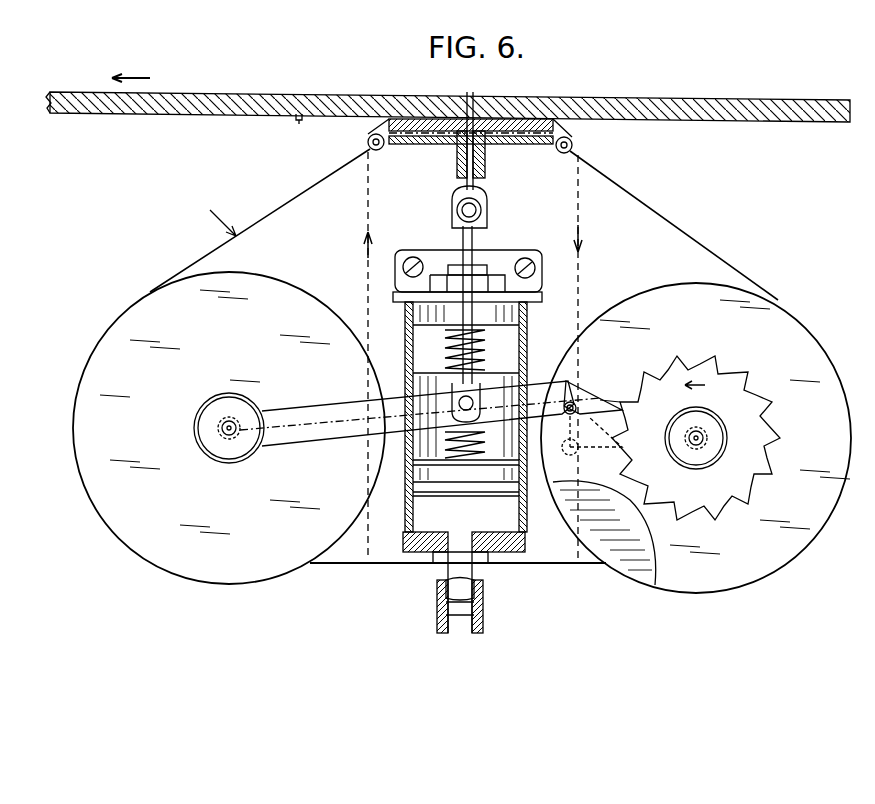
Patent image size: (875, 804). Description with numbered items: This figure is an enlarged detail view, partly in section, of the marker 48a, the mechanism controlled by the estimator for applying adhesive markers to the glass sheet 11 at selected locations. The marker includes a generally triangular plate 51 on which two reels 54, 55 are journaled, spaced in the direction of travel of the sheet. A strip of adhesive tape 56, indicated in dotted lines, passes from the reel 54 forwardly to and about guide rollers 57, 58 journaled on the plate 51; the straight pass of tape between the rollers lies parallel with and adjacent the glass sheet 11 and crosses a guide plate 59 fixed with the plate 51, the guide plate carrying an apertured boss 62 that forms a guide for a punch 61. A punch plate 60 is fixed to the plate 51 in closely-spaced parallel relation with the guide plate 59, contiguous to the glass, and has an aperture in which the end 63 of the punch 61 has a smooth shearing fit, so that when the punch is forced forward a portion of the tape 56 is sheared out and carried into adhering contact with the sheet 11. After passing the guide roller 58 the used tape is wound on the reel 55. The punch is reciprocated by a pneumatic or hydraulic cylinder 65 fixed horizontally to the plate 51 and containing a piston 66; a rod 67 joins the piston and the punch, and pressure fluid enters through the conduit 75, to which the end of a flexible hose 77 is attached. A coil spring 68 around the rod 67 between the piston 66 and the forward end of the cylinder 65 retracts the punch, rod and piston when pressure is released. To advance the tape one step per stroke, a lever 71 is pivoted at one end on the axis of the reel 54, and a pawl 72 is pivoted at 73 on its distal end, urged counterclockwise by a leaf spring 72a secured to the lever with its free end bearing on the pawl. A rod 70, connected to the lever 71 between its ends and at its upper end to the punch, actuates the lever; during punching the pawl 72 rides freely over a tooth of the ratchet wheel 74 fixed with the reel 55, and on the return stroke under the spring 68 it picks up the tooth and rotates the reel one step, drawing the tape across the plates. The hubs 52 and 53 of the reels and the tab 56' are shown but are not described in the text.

The glass sheet 11 is at (205, 97).
The belt tab 56' is at (296, 132).
The punch plate 60 is at (405, 120).
The guide plate 59 is at (425, 144).
The apertured boss 62 is at (485, 160).
The end of punch 63 is at (470, 120).
The punch 61 is at (481, 178).
The guide roller 57 is at (378, 151).
The guide roller 58 is at (562, 154).
The triangular plate 51 is at (655, 214).
The adhesive tape 56 is at (477, 356).
The marker 48a is at (205, 213).
The reel 54 is at (242, 334).
The left hub 52 is at (226, 428).
The reel 55 is at (712, 324).
The right hub 53 is at (705, 438).
The ratchet wheel 74 is at (666, 362).
The lever 71 is at (332, 432).
The pawl 72 is at (598, 396).
The pivot 73 is at (566, 406).
The leaf spring 72a is at (591, 533).
The rod 67 is at (458, 238).
The rod 70 is at (474, 242).
The piston 66 is at (466, 480).
The coil spring 68 is at (480, 346).
The pneumatic or hydraulic cylinder 65 is at (411, 565).
The conduit 75 is at (462, 612).
The flexible hose 77 is at (437, 626).